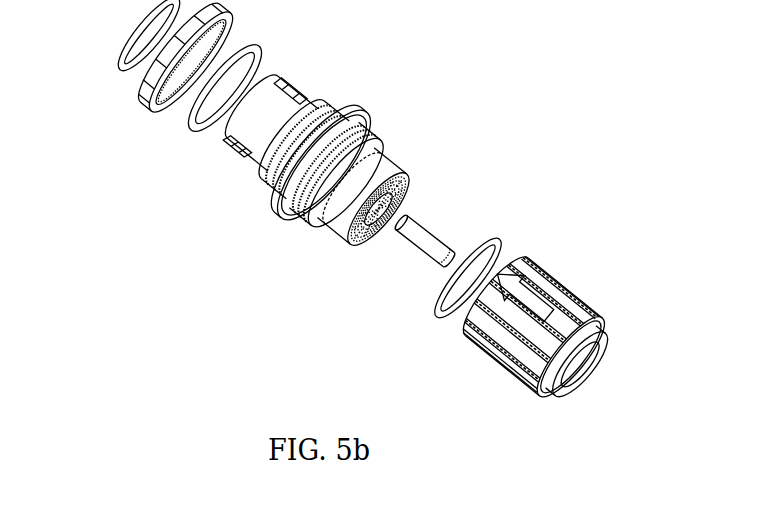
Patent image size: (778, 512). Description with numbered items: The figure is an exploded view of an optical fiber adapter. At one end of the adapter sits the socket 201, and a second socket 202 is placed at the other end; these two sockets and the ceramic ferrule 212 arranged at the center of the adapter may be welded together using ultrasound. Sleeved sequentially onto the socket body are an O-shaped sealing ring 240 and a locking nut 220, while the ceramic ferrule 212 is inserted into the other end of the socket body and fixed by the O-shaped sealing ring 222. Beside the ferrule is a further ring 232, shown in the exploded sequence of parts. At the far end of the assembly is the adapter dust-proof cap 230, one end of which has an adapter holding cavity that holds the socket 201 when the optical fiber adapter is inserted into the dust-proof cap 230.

The socket 201 is at (363, 173).
The socket 202 is at (283, 177).
The ceramic ferrule 212 is at (425, 238).
The locking nut 220 is at (142, 107).
The O-shaped sealing ring 222 is at (118, 60).
The adapter dust-proof cap 230 is at (563, 283).
The O-ring 232 is at (488, 240).
The O-shaped sealing ring 240 is at (190, 127).